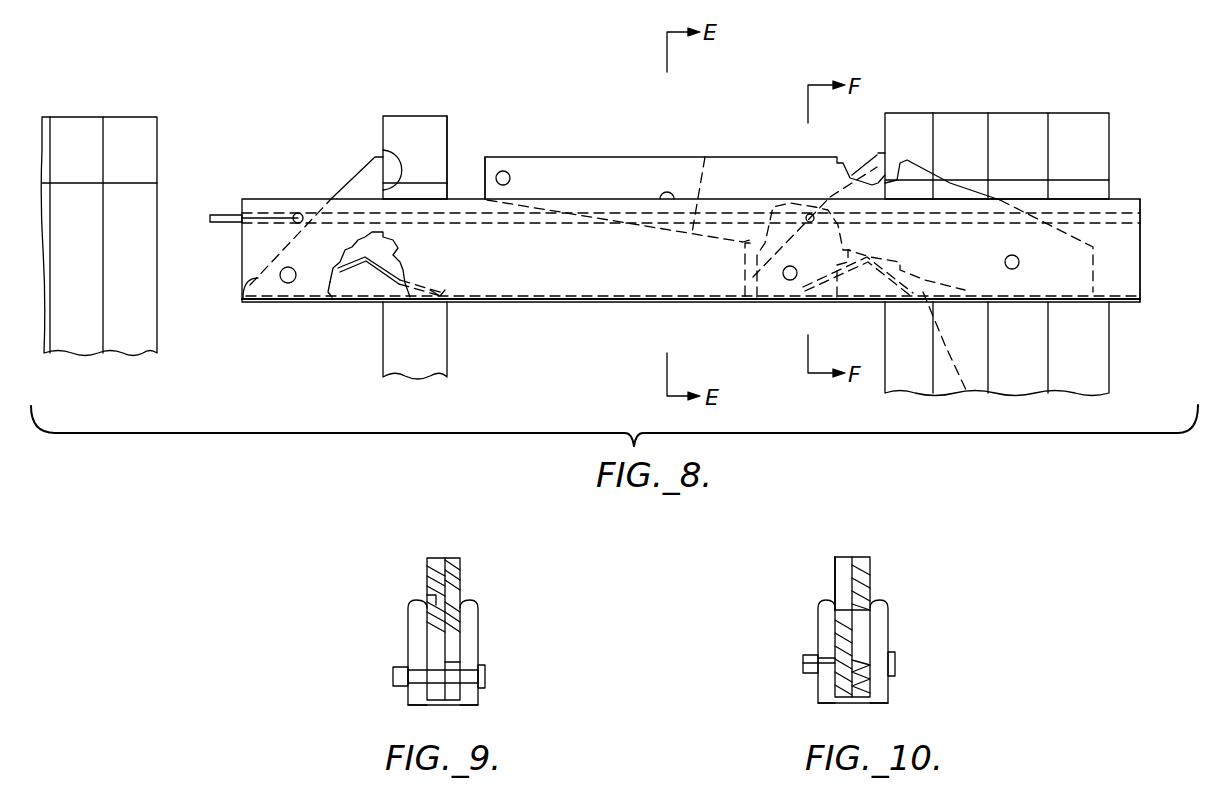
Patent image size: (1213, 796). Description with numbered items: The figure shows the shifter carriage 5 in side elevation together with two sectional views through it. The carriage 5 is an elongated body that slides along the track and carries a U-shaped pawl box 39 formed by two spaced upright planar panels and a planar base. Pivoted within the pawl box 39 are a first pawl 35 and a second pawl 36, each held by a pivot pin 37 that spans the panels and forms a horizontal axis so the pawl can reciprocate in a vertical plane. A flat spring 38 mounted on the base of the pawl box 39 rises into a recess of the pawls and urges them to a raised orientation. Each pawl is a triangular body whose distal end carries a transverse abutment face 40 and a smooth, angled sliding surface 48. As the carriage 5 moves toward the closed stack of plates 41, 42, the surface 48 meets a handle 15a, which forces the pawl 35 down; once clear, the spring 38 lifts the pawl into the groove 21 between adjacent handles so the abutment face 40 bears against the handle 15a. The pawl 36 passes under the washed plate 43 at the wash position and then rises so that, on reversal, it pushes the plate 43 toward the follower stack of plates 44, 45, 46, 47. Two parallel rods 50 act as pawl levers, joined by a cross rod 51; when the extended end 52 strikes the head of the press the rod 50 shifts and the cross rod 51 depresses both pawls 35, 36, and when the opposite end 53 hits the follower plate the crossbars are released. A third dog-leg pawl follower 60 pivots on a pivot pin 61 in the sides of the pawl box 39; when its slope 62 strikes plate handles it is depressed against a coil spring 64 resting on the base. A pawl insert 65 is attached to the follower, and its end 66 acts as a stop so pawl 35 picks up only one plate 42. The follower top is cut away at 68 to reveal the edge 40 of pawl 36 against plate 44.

In FIG. 8, the carriage 5 is at (698, 116).
In FIG. 8, the handle 15a is at (403, 116).
In FIG. 8, the groove 21 is at (681, 214).
In FIG. 8, the first pawl 35 is at (345, 185).
In FIG. 8, the second pawl 36 is at (870, 165).
In FIG. 8, the pivot pin 37 is at (292, 283).
In FIG. 8, the flat spring 38 is at (403, 268).
In FIG. 9, the pawl box 39 is at (480, 632).
In FIG. 10, the pawl box 39 is at (888, 700).
In FIG. 8, the abutment face 40 is at (386, 162).
In FIG. 8, the plate 41 is at (68, 117).
In FIG. 8, the plate 42 is at (128, 117).
In FIG. 8, the washed plate 43 is at (447, 140).
In FIG. 8, the follower stack plate 44 is at (920, 113).
In FIG. 8, the follower stack plate 45 is at (978, 113).
In FIG. 8, the follower stack plate 46 is at (1035, 113).
In FIG. 8, the follower stack plate 47 is at (1098, 113).
In FIG. 8, the sliding surface 48 is at (363, 170).
In FIG. 8, the rod 50 is at (232, 221).
In FIG. 10, the rod 50 is at (818, 602).
In FIG. 8, the cross rod 51 is at (298, 213).
In FIG. 10, the cross rod 51 is at (838, 605).
In FIG. 8, the extended end 52 is at (214, 216).
In FIG. 8, the extended end 53 is at (1140, 215).
In FIG. 8, the pawl follower 60 is at (640, 172).
In FIG. 9, the pawl follower 60 is at (458, 558).
In FIG. 10, the pawl follower 60 is at (870, 557).
In FIG. 8, the pivot pin 61 is at (1019, 266).
In FIG. 8, the slope 62 is at (970, 180).
In FIG. 10, the coil spring 64 is at (862, 700).
In FIG. 9, the pawl insert 65 is at (428, 558).
In FIG. 10, the pawl insert 65 is at (835, 557).
In FIG. 8, the end 66 is at (485, 168).
In FIG. 8, the cutaway 68 is at (850, 170).